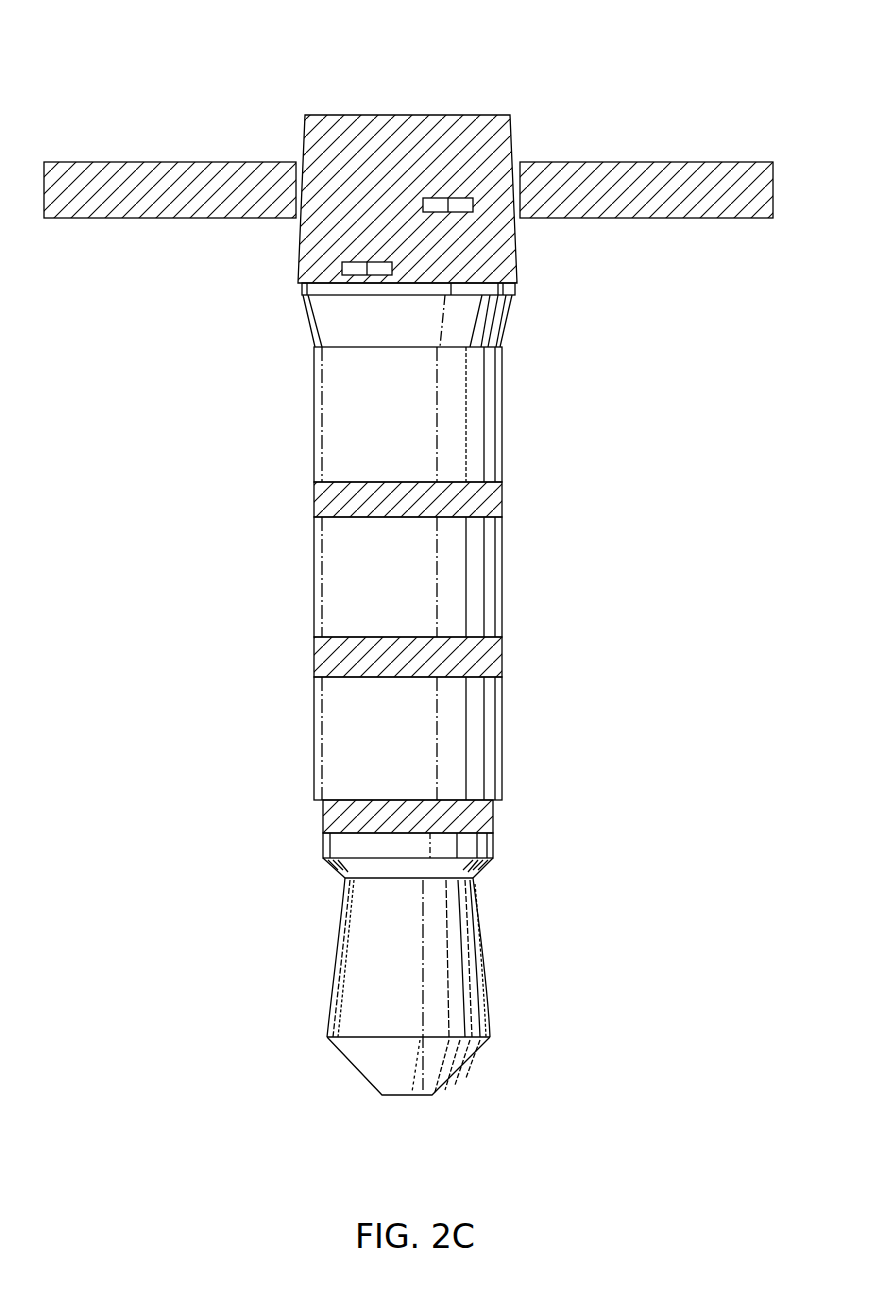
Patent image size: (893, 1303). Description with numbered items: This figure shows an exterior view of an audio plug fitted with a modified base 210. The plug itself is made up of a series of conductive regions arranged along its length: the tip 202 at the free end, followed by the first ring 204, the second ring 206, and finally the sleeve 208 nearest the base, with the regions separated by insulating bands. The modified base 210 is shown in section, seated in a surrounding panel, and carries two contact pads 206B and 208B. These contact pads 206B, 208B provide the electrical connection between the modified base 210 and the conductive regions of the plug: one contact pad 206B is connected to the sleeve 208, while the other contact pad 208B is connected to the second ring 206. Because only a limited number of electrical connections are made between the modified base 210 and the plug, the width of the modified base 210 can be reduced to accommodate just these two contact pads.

The tip 202 is at (466, 1062).
The first ring 204 is at (314, 722).
The second ring 206 is at (314, 572).
The sleeve 208 is at (314, 406).
The contact pad 206B is at (340, 268).
The contact pad 208B is at (473, 205).
The modified base 210 is at (510, 115).